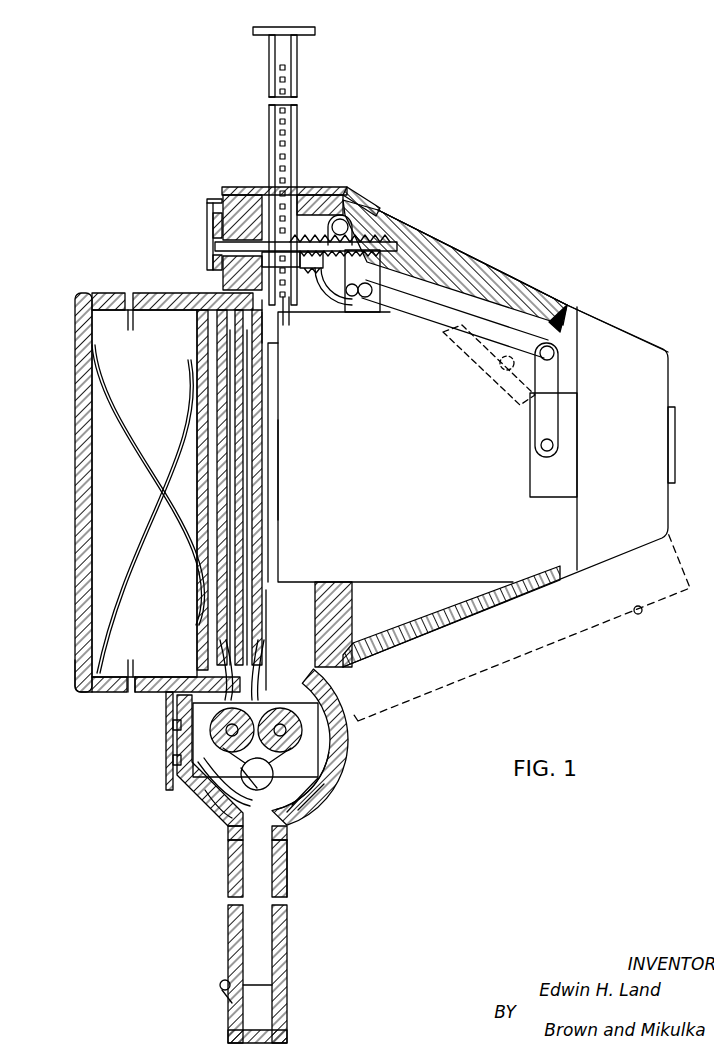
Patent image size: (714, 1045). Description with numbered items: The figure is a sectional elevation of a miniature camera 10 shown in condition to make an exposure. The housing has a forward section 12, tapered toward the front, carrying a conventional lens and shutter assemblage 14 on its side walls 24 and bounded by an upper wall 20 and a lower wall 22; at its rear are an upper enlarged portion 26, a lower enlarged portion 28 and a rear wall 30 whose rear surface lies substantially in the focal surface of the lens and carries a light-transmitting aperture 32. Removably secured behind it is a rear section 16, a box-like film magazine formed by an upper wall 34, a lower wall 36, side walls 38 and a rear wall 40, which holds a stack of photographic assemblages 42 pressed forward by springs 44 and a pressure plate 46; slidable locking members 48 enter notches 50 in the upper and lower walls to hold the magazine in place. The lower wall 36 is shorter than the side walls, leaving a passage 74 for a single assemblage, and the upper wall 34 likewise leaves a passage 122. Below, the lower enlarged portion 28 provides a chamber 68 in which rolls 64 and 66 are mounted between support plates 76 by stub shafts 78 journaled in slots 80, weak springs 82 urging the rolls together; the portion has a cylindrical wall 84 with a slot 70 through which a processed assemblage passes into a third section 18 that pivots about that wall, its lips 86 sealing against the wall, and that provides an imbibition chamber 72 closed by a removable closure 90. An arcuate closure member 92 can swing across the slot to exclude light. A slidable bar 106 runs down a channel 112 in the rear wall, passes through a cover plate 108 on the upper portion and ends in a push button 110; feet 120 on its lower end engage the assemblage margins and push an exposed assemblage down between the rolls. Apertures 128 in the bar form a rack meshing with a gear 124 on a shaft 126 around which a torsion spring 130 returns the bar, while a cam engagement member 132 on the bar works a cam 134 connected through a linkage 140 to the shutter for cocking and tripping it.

The camera 10 is at (492, 248).
The forward section 12 is at (540, 280).
The lens and shutter assemblage 14 is at (620, 330).
The rear section 16 is at (75, 700).
The third section 18 is at (578, 643).
The upper wall 20 is at (562, 315).
The lower wall 22 is at (440, 620).
The side walls 24 is at (427, 444).
The upper enlarged portion 26 is at (228, 192).
The lower enlarged portion 28 is at (348, 770).
The rear wall 30 is at (270, 383).
The aperture 32 is at (282, 478).
The upper wall 34 is at (104, 293).
The lower wall 36 is at (118, 692).
The side walls 38 is at (144, 493).
The rear wall 40 is at (75, 483).
The photographic assemblages 42 is at (264, 432).
The springs 44 is at (192, 425).
The pressure plate 46 is at (197, 340).
The locking members 48 is at (212, 200).
The notches 50 is at (134, 677).
The roll 64 is at (305, 760).
The roll 66 is at (193, 745).
The chamber 68 is at (298, 805).
The slot 70 is at (230, 870).
The imbibition chamber 72 is at (262, 945).
The passage 74 is at (252, 700).
The support plates 76 is at (338, 770).
The stub shafts 78 is at (272, 706).
The slots 80 is at (200, 680).
The springs 82 is at (215, 820).
The cylindrical wall 84 is at (325, 800).
The lips 86 is at (230, 835).
The closure 90 is at (228, 1020).
The closure member 92 is at (190, 800).
The slidable bar 106 is at (270, 62).
The cover plate 108 is at (352, 185).
The push button 110 is at (315, 30).
The channel 112 is at (285, 328).
The feet 120 is at (318, 300).
The passage 122 is at (325, 302).
The gear 124 is at (310, 195).
The shaft 126 is at (400, 222).
The apertures 128 is at (290, 92).
The torsion spring 130 is at (383, 205).
The cam engagement member 132 is at (318, 292).
The cam 134 is at (390, 305).
The linkage 140 is at (560, 352).